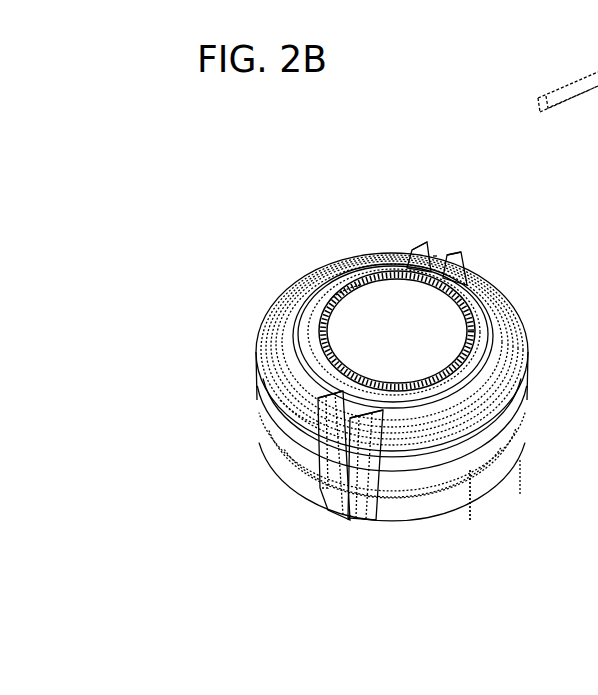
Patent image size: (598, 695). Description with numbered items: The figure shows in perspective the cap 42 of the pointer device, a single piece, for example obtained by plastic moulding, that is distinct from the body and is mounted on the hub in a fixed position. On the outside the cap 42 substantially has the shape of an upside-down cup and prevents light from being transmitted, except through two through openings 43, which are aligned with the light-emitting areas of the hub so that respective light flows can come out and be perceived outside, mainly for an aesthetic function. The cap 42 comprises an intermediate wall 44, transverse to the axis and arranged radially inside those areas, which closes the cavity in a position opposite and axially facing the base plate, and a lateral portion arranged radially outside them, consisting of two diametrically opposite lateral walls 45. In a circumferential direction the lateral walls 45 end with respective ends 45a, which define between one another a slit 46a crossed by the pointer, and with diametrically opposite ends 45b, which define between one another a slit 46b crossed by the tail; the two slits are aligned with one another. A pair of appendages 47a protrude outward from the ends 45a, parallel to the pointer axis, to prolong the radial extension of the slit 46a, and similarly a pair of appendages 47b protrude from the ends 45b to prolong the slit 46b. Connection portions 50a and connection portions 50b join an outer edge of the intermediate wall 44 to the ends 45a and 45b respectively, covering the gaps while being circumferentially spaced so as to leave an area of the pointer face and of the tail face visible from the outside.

The cap 42 is at (530, 330).
The through openings 43 is at (300, 333).
The intermediate wall 44 is at (257, 350).
The lateral walls 45 is at (250, 465).
The ends 45a is at (300, 490).
The ends 45b is at (410, 250).
The slit 46a is at (340, 524).
The slit 46b is at (437, 260).
The appendages 47a is at (322, 500).
The appendages 47b is at (420, 248).
The connection portions 50a is at (290, 400).
The connection portions 50b is at (385, 265).